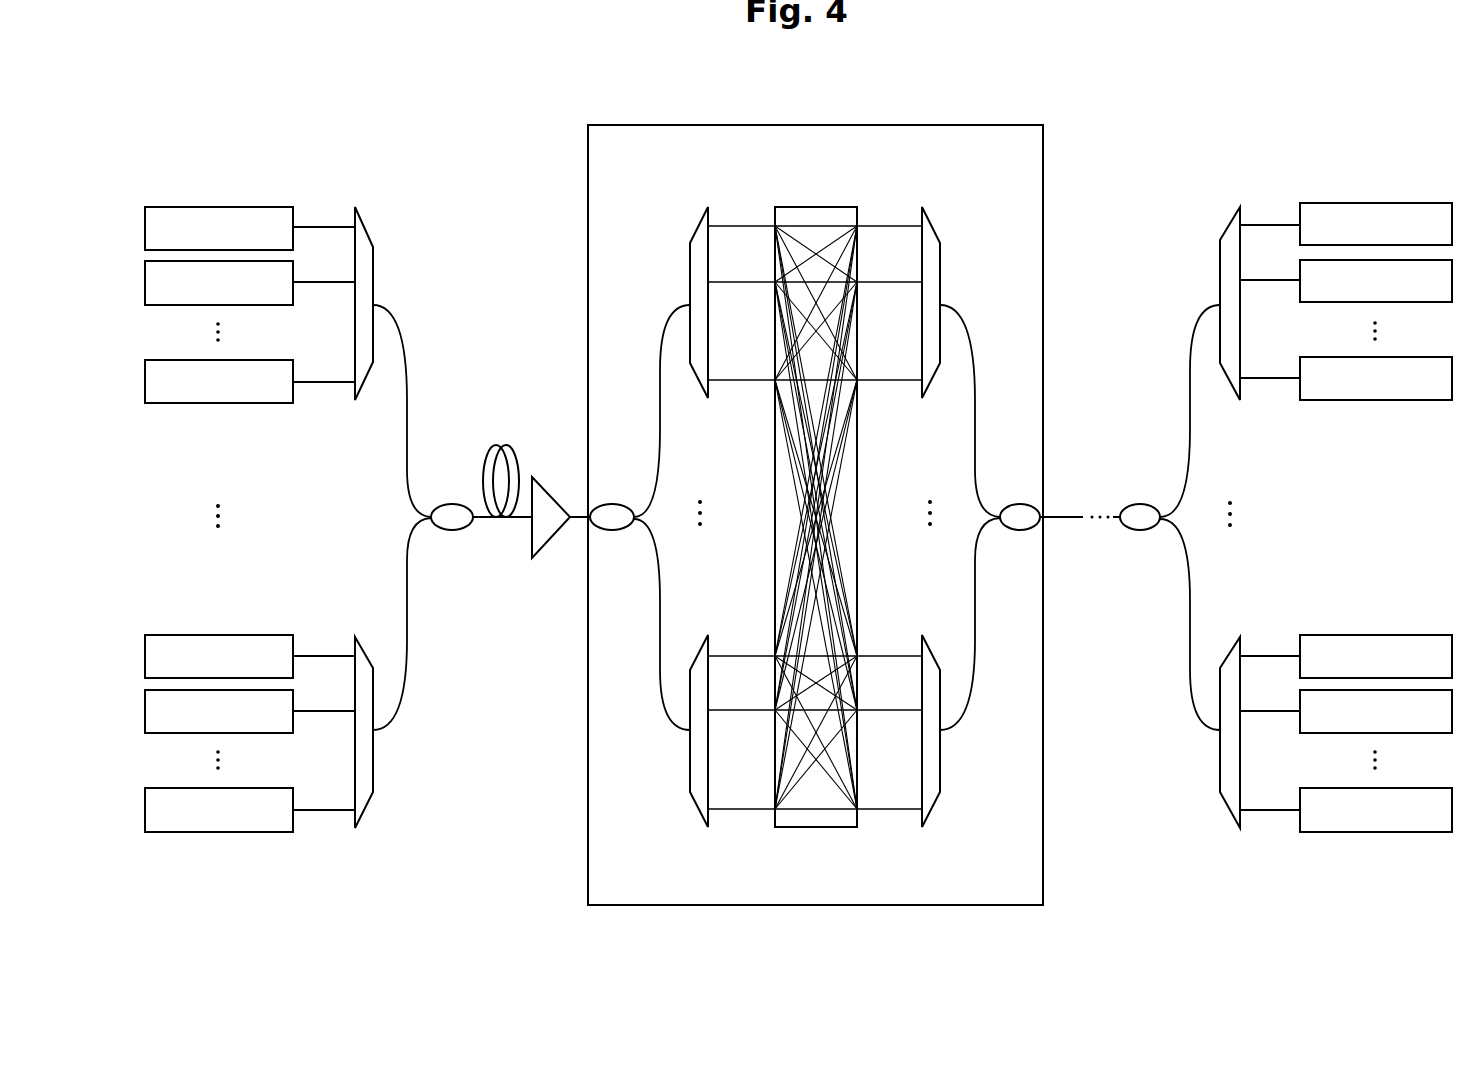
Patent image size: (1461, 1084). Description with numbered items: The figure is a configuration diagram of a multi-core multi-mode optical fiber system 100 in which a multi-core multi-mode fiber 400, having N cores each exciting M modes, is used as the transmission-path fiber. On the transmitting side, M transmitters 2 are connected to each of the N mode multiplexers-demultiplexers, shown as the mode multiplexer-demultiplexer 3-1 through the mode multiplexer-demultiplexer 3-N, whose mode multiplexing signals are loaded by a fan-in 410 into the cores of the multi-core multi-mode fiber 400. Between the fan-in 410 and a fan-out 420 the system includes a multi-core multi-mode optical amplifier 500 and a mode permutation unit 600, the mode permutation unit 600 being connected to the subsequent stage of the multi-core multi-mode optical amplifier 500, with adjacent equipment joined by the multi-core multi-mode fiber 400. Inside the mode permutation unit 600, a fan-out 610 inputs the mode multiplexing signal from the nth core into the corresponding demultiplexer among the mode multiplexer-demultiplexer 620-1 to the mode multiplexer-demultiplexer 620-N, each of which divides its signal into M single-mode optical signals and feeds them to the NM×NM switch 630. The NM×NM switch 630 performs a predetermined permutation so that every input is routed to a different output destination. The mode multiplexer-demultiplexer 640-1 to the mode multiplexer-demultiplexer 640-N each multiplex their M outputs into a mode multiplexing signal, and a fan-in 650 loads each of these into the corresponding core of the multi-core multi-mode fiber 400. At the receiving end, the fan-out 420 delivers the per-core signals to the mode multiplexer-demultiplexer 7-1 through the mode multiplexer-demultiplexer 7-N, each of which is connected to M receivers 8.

The multi-core multi-mode optical fiber system 100 is at (1303, 116).
The transmitter 2 is at (170, 205).
The mode multiplexer-demultiplexer 3-1 is at (375, 224).
The mode multiplexer-demultiplexer 3-N is at (376, 806).
The multi-core multi-mode fiber 400 is at (508, 445).
The fan-in 410 is at (448, 505).
The multi-core multi-mode optical amplifier 500 is at (531, 545).
The mode permutation unit 600 is at (815, 125).
The fan-out 610 is at (615, 505).
The mode multiplexer-demultiplexer 620-1 is at (702, 227).
The mode multiplexer-demultiplexer 620-N is at (702, 810).
The NM×NM switch 630 is at (820, 828).
The mode multiplexer-demultiplexer 640-1 is at (965, 207).
The mode multiplexer-demultiplexer 640-N is at (930, 810).
The fan-in 650 is at (1015, 505).
The fan-out 420 is at (1137, 505).
The mode multiplexer-demultiplexer 7-1 is at (1222, 228).
The mode multiplexer-demultiplexer 7-N is at (1222, 806).
The receiver 8 is at (1385, 203).